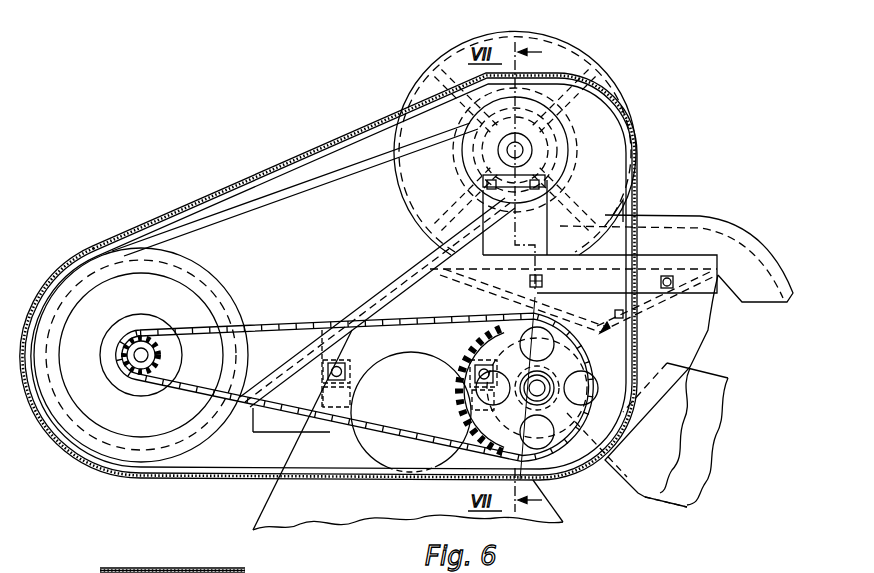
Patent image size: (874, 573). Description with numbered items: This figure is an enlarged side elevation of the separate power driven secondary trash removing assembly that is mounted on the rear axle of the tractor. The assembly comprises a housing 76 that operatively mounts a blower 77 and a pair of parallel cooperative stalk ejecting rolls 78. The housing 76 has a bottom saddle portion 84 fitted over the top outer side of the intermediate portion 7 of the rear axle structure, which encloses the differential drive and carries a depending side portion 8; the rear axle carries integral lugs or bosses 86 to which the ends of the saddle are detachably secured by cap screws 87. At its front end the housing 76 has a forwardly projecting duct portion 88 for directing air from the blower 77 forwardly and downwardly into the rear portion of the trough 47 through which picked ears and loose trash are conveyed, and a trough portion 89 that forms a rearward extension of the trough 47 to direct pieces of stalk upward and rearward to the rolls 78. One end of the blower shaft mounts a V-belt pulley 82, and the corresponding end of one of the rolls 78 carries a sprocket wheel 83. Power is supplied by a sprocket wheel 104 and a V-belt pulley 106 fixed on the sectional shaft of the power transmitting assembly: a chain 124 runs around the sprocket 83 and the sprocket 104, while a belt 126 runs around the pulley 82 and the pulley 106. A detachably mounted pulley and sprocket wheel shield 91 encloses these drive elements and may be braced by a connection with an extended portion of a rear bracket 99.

The intermediate portion of rear axle structure 7 is at (365, 440).
The depending side portion of rear axle 8 is at (268, 507).
The trough 47 is at (700, 428).
The housing 76 is at (424, 88).
The blower 77 is at (588, 214).
The stalk ejecting rolls 78 is at (566, 355).
The V-belt pulley 82 is at (566, 148).
The sprocket wheel 83 is at (490, 346).
The bottom saddle portion 84 is at (402, 355).
The lugs or bosses 86 is at (326, 396).
The cap screws 87 is at (328, 378).
The duct portion 88 is at (766, 234).
The trough portion 89 is at (550, 428).
The pulley and sprocket wheel shield 91 is at (236, 191).
The brackets 99 is at (40, 300).
The sprocket wheel 104 is at (165, 356).
The V-belt pulley 106 is at (222, 291).
The chain 124 is at (308, 328).
The belt 126 is at (336, 178).